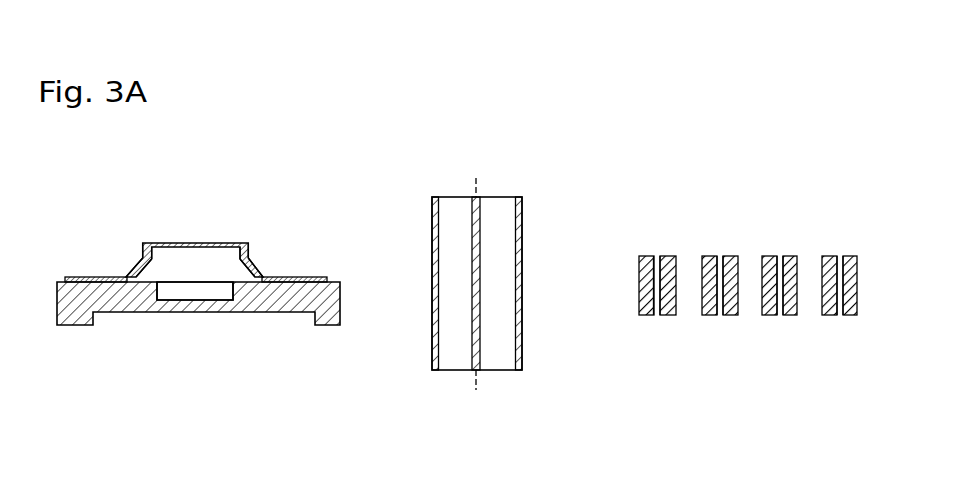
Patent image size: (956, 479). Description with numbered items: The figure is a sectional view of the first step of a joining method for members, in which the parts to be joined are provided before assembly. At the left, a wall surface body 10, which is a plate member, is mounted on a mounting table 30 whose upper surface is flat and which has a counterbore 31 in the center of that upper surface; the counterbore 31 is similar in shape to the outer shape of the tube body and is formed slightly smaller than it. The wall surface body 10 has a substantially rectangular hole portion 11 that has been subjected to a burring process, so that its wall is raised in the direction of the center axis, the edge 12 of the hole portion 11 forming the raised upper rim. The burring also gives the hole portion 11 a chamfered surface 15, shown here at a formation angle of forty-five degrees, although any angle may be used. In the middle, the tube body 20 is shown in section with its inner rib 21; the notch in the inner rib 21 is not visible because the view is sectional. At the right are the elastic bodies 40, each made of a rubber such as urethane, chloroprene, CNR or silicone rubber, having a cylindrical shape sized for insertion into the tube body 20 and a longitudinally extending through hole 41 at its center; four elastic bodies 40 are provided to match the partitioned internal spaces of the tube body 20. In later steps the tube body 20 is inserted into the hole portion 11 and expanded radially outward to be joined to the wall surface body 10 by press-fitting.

The wall surface body 10 is at (105, 275).
The hole portion 11 is at (237, 240).
The edge 12 is at (150, 245).
The chamfered surface 15 is at (138, 262).
The tube body 20 is at (522, 200).
The inner rib 21 is at (477, 240).
The mounting table 30 is at (118, 307).
The counterbore 31 is at (230, 297).
The elastic body 40 is at (703, 256).
The through hole 41 is at (720, 315).